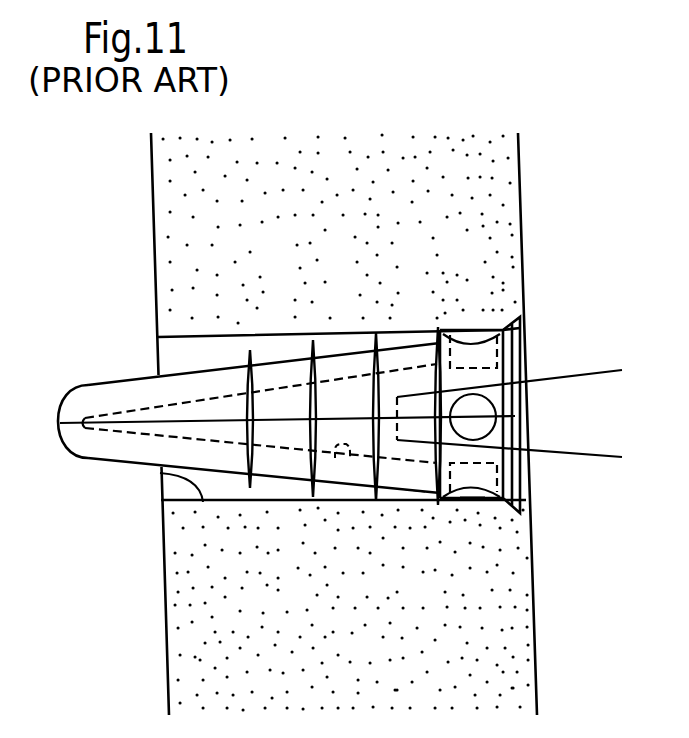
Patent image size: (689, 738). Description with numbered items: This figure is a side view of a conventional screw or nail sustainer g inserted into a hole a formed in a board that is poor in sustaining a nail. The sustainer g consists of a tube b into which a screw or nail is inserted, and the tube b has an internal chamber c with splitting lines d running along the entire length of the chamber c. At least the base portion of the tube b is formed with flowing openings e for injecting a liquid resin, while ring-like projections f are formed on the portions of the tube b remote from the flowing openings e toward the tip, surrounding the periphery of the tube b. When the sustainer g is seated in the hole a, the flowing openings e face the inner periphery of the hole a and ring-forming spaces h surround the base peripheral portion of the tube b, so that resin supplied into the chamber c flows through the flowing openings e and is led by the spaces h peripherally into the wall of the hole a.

The hole a is at (162, 473).
The tube b is at (283, 462).
The chamber c is at (350, 458).
The splitting lines d is at (287, 418).
The flowing openings e is at (467, 357).
The ring-like projections f is at (423, 347).
The screw or nail sustainer g is at (138, 398).
The spaces h is at (410, 493).